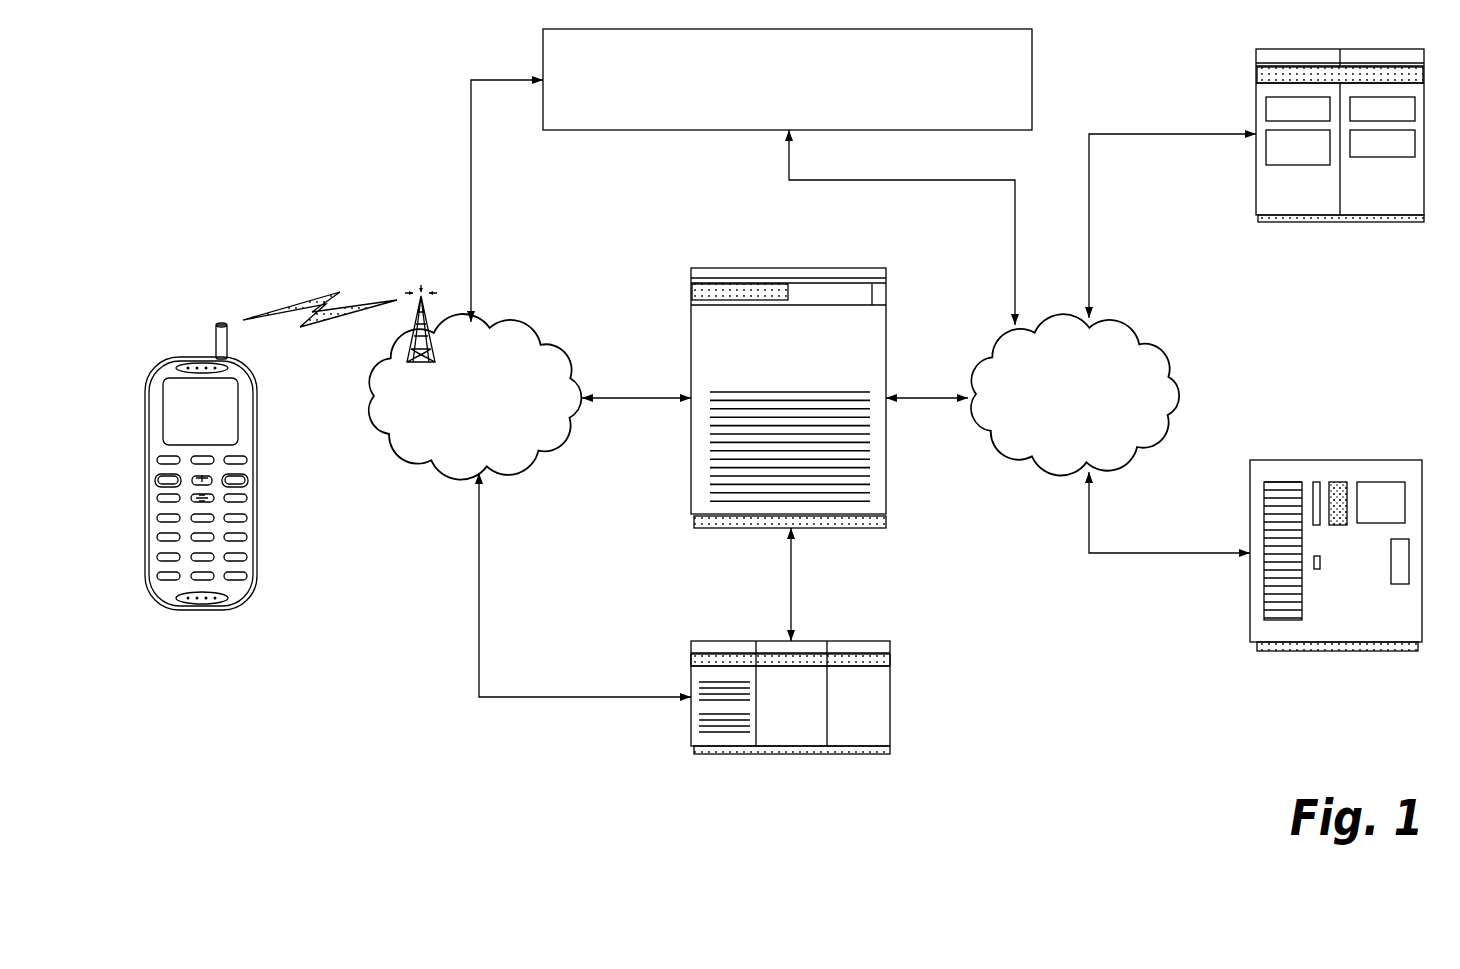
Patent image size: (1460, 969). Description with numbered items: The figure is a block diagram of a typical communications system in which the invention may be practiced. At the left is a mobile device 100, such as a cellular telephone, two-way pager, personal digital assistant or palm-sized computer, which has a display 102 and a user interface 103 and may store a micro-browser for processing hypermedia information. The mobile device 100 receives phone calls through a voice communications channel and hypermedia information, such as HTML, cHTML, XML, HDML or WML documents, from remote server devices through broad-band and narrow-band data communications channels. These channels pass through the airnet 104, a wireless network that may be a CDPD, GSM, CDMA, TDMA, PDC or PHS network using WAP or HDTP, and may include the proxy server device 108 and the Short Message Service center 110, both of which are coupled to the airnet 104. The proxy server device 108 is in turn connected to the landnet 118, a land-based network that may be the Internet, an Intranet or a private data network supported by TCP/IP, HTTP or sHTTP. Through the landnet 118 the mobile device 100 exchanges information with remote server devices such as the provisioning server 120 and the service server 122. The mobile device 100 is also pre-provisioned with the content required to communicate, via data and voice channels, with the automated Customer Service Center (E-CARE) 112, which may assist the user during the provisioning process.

The mobile device 100 is at (271, 451).
The display 102 is at (238, 427).
The user interface 103 is at (240, 448).
The airnet 104 is at (548, 315).
The proxy server device 108 is at (887, 310).
The Short Message Service center (SMSC) 110 is at (890, 673).
The automated Customer Service Center (E-CARE) 112 is at (1032, 43).
The landnet 118 is at (1173, 358).
The provisioning server 120 is at (1350, 48).
The service server 122 is at (1338, 460).